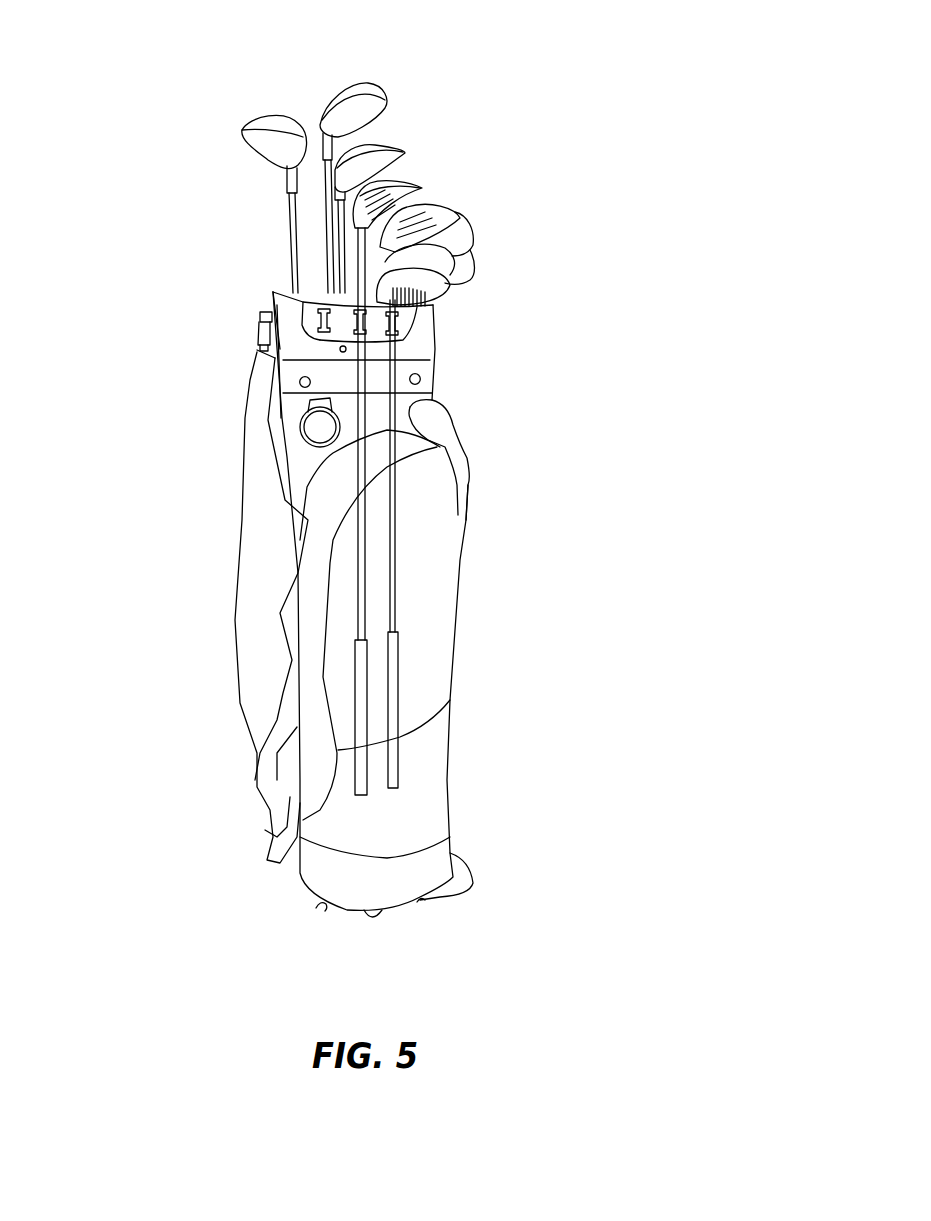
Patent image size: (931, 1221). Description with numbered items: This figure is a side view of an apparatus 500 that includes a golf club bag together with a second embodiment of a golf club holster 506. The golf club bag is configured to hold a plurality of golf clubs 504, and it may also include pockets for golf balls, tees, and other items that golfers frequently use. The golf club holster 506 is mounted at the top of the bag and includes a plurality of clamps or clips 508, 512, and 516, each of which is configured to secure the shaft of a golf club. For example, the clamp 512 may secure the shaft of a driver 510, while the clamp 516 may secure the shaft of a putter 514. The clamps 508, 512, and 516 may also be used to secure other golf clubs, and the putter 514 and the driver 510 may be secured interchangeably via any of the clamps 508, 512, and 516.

The apparatus 500 is at (105, 38).
The golf clubs 504 is at (427, 146).
The golf club holster 506 is at (307, 308).
The clamp 508 is at (317, 323).
The driver 510 is at (420, 187).
The clamp 512 is at (352, 325).
The putter 514 is at (433, 290).
The clamp 516 is at (420, 347).